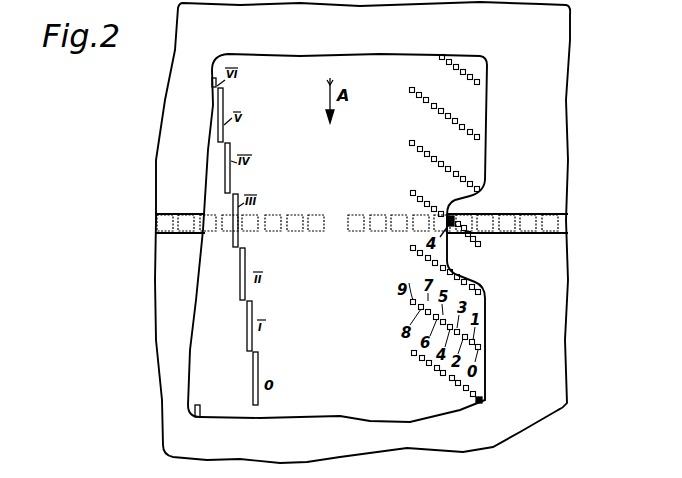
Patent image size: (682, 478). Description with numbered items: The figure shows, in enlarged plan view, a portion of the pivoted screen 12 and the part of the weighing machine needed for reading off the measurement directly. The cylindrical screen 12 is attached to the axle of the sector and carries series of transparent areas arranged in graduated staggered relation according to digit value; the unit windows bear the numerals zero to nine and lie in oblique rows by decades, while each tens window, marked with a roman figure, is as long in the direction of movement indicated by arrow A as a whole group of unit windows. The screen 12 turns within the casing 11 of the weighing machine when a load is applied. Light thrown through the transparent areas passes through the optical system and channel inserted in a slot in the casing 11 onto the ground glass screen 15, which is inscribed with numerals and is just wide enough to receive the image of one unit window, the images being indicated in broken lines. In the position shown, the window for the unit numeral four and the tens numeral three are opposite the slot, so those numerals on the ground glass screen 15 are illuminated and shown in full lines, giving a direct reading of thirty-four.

The casing 11 is at (562, 40).
The screen 12 is at (353, 403).
The ground glass screen 15 is at (567, 217).